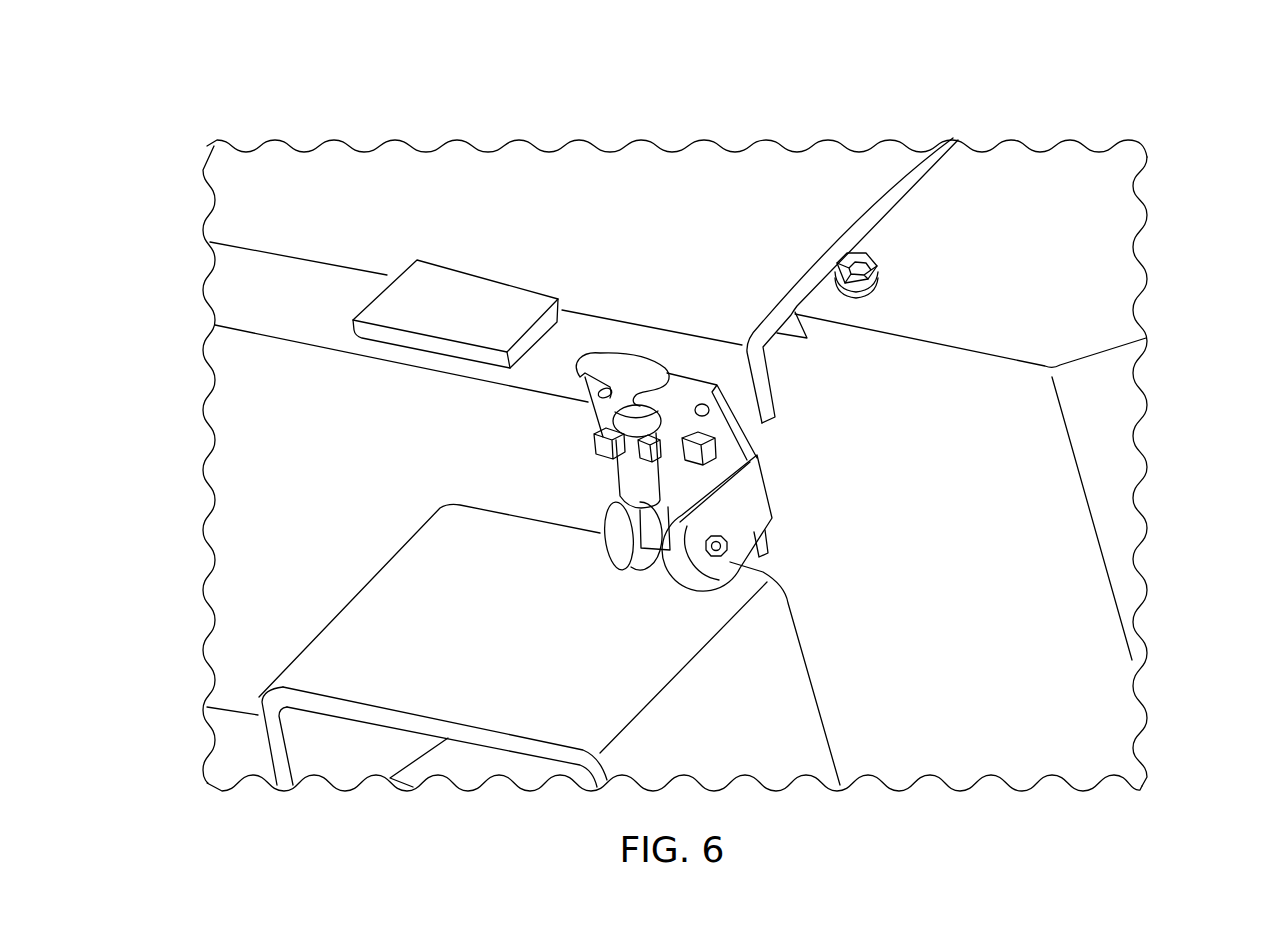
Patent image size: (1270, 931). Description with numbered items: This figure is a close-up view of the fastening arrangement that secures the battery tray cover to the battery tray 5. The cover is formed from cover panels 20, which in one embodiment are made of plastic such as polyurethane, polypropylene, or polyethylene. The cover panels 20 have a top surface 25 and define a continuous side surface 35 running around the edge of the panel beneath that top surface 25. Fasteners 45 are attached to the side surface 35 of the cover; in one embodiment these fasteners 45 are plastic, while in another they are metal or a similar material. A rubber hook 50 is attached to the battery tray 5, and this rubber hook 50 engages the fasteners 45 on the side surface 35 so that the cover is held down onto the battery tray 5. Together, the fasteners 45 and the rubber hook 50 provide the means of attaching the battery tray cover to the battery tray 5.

The battery tray 5 is at (965, 617).
The cover panels 20 is at (827, 196).
The top surface 25 is at (668, 192).
The side surface 35 is at (312, 302).
The fasteners 45 is at (667, 422).
The rubber hook 50 is at (622, 372).